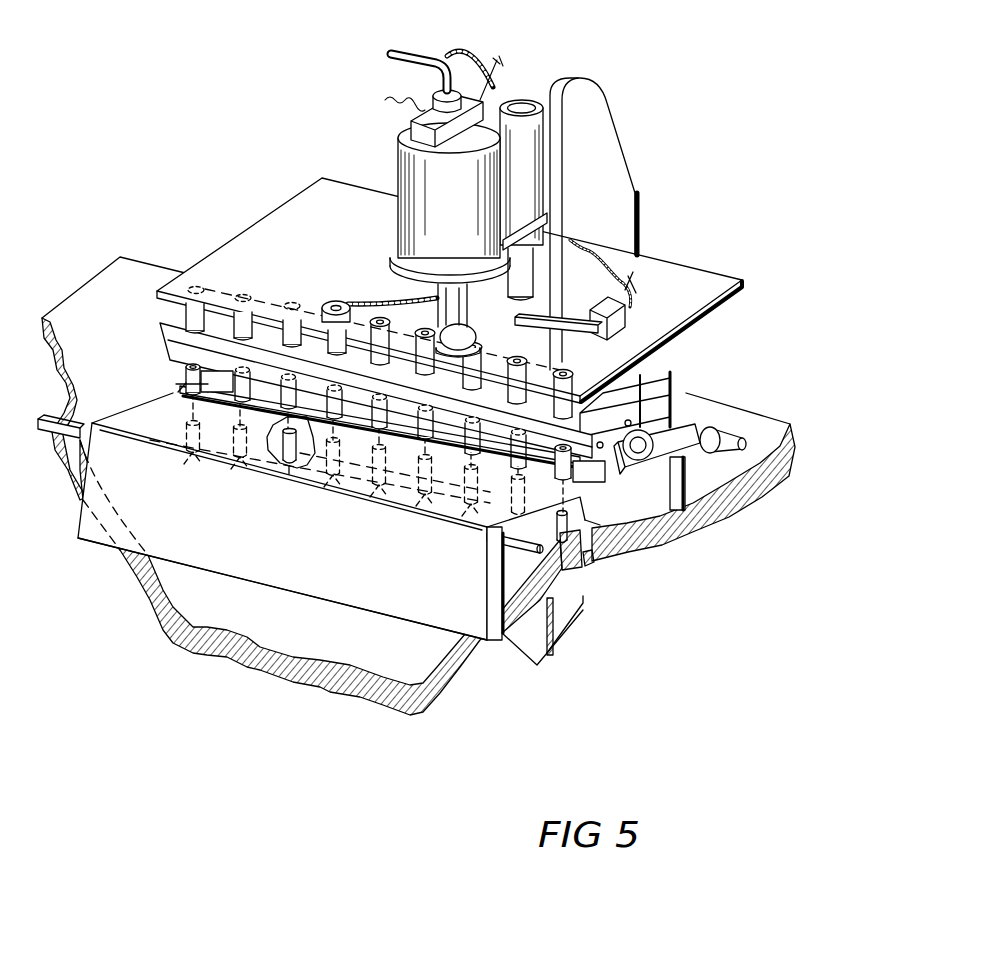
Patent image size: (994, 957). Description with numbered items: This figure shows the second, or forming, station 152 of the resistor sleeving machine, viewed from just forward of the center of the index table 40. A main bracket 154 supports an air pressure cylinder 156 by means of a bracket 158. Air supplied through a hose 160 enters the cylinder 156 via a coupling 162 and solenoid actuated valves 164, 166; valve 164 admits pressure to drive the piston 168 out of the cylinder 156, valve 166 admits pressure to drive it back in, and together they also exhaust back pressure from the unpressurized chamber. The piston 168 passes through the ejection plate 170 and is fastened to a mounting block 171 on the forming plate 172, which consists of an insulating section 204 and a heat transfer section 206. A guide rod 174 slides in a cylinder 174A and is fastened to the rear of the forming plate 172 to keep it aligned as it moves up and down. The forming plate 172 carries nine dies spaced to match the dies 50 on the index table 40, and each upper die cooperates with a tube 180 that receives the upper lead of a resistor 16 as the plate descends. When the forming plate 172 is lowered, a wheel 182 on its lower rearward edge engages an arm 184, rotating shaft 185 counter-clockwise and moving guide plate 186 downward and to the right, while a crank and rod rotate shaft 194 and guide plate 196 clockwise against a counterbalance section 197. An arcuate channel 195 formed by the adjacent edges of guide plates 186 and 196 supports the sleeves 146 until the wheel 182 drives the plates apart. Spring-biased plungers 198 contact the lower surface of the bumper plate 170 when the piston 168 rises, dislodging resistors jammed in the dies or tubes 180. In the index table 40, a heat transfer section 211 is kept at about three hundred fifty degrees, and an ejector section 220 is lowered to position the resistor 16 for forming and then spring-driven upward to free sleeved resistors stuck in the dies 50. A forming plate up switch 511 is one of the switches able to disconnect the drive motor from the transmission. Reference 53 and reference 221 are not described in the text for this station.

The resistor 16 is at (297, 431).
The index table 40 is at (371, 649).
The die 50 is at (308, 466).
The sheet 53 is at (116, 291).
The sleeve 146 is at (186, 370).
The forming station 152 is at (638, 224).
The main bracket 154 is at (573, 164).
The air pressure cylinder 156 is at (434, 213).
The bracket 158 is at (530, 239).
The hose 160 is at (398, 54).
The coupling 162 is at (440, 91).
The solenoid actuated valve 164 is at (484, 98).
The solenoid actuated valve 166 is at (415, 126).
The piston 168 is at (440, 306).
The ejection plate 170 is at (323, 242).
The mounting block 171 is at (470, 336).
The forming plate 172 is at (138, 334).
The guide rod 174 is at (524, 284).
The cylinder 174A is at (524, 182).
The tube 180 is at (331, 302).
The wheel 182 is at (655, 436).
The arm 184 is at (688, 452).
The shaft 185 is at (726, 450).
The guide plate 186 is at (205, 391).
The shaft 194 is at (71, 426).
The arcuate channel 195 is at (176, 389).
The guide plate 196 is at (154, 424).
The counterbalance section 197 is at (312, 582).
The plunger 198 is at (349, 300).
The insulating section 204 is at (190, 346).
The heat transfer section 206 is at (165, 348).
The heat transfer section 211 is at (512, 577).
The ejector section 220 is at (603, 576).
The tab 221 is at (594, 561).
The forming plate up switch 511 is at (587, 351).